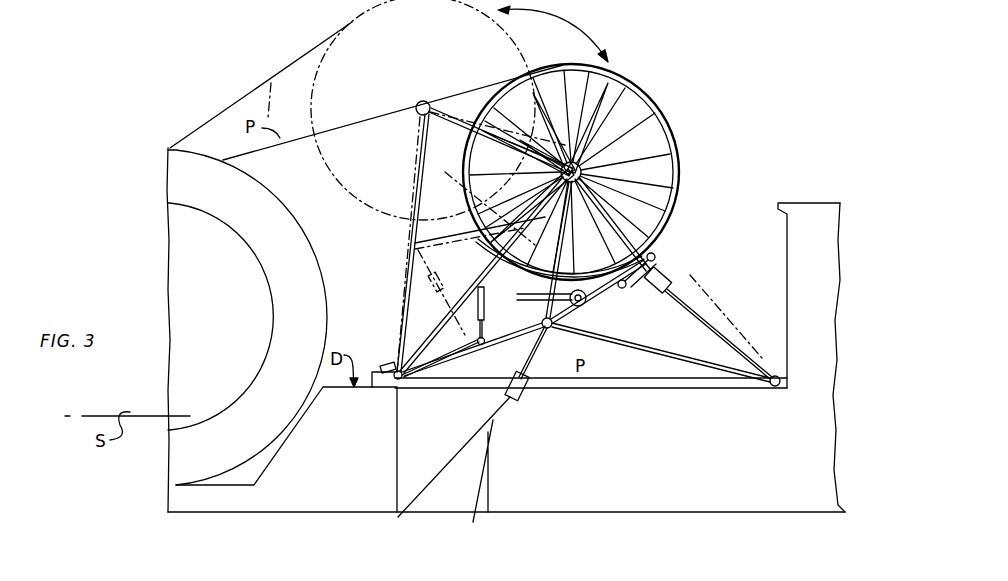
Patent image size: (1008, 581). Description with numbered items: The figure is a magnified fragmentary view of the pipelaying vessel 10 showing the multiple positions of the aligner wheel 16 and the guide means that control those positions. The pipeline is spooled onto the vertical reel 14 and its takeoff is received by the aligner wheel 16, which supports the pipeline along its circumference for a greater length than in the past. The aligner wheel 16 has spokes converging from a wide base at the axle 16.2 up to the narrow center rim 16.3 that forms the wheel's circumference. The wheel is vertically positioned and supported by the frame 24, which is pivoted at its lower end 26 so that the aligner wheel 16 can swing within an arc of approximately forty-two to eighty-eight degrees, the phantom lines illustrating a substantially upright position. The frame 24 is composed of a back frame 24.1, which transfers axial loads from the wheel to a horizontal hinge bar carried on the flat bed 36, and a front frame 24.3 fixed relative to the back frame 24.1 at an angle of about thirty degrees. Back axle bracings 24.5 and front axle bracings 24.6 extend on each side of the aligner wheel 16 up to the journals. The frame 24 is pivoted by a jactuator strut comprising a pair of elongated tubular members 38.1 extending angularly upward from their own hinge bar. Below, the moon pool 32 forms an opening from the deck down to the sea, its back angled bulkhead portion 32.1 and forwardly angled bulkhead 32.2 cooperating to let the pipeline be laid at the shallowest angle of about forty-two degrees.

The pipelaying vessel 10 is at (752, 467).
The vertical reel 14 is at (308, 322).
The aligner wheel 16 is at (675, 135).
The axle 16.2 is at (581, 172).
The center rim 16.3 is at (653, 106).
The frame 24 is at (392, 330).
The back frame 24.1 is at (481, 345).
The front frame 24.3 is at (652, 296).
The back axle bracings 24.5 is at (598, 300).
The front axle bracings 24.6 is at (653, 257).
The lower end of frame 26 is at (393, 386).
The moon pool 32 is at (445, 442).
The back angled bulkhead portion 32.1 is at (397, 505).
The forwardly angled bulkhead 32.2 is at (513, 410).
The flat bed 36 is at (647, 376).
The elongated tubular members 38.1 is at (707, 327).